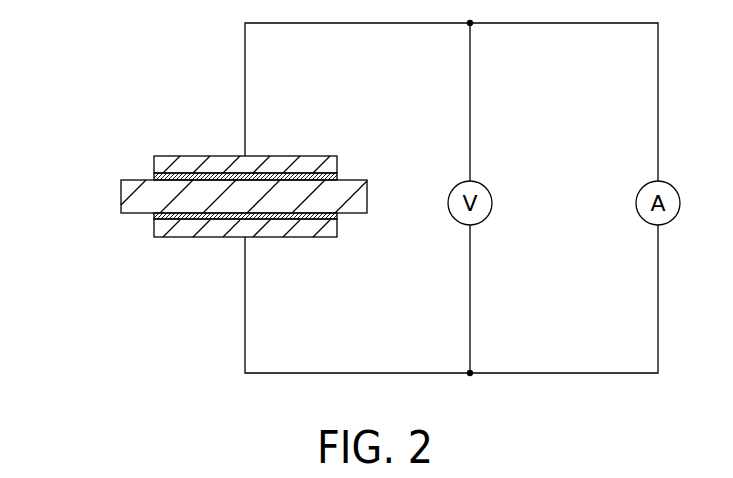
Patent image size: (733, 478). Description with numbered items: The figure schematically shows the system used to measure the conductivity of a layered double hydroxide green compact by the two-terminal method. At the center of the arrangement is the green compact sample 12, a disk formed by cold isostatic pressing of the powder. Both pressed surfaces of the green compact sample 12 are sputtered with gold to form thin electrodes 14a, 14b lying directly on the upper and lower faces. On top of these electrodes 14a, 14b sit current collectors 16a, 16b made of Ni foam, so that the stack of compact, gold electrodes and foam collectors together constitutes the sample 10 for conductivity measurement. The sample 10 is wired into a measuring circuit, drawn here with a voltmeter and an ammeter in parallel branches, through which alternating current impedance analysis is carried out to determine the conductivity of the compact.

The sample for conductivity measurement 10 is at (323, 140).
The green compact sample 12 is at (128, 195).
The electrode 14a is at (153, 216).
The electrode 14b is at (153, 178).
The current collector 16a is at (175, 228).
The current collector 16b is at (163, 163).